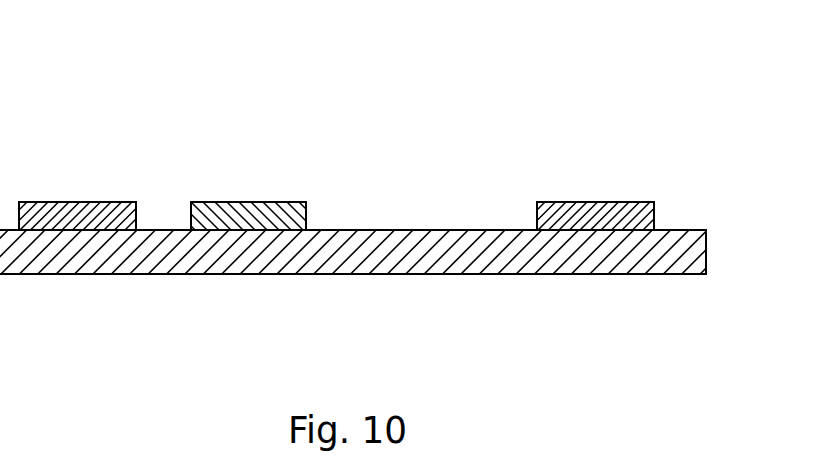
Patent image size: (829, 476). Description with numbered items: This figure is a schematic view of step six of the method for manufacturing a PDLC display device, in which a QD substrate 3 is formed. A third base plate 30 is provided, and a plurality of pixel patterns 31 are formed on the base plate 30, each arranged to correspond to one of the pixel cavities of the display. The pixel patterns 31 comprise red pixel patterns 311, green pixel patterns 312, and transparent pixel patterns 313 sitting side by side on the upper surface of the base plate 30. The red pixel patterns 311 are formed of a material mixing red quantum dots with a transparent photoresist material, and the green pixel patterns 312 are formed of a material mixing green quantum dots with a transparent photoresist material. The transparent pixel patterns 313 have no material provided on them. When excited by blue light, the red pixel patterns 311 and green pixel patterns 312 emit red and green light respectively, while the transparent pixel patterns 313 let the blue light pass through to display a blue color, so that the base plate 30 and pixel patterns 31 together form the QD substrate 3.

The QD substrate 3 is at (387, 177).
The third base plate 30 is at (642, 257).
The pixel patterns 31 is at (346, 122).
The red pixel patterns 311 is at (83, 215).
The green pixel patterns 312 is at (253, 215).
The transparent pixel patterns 313 is at (538, 164).